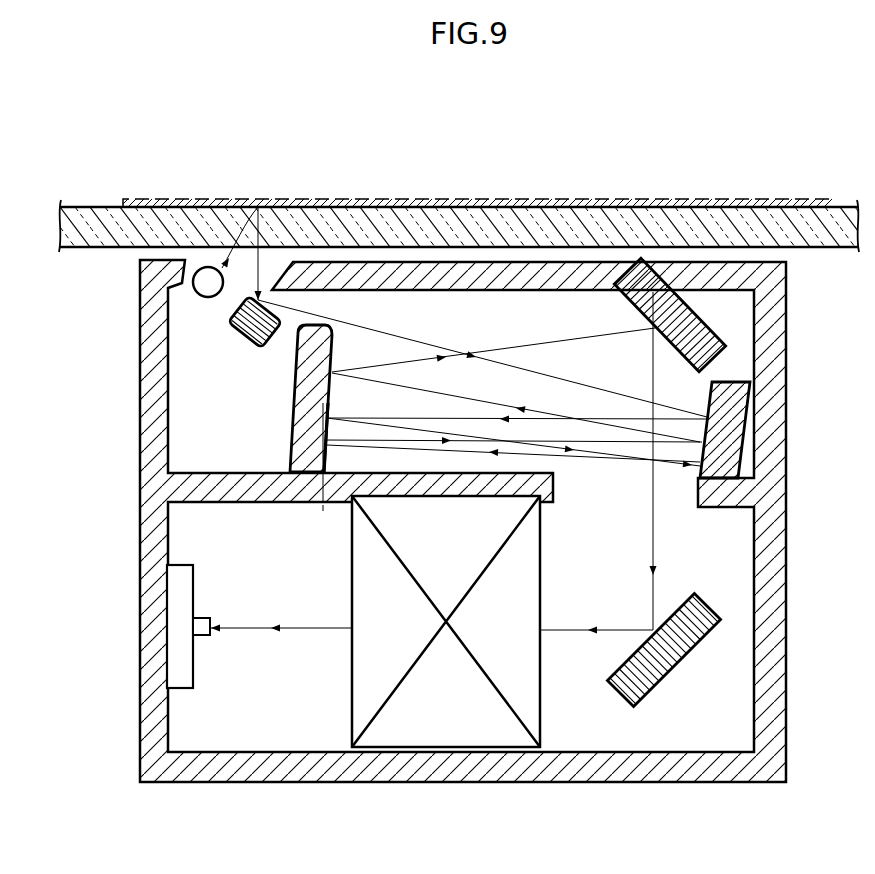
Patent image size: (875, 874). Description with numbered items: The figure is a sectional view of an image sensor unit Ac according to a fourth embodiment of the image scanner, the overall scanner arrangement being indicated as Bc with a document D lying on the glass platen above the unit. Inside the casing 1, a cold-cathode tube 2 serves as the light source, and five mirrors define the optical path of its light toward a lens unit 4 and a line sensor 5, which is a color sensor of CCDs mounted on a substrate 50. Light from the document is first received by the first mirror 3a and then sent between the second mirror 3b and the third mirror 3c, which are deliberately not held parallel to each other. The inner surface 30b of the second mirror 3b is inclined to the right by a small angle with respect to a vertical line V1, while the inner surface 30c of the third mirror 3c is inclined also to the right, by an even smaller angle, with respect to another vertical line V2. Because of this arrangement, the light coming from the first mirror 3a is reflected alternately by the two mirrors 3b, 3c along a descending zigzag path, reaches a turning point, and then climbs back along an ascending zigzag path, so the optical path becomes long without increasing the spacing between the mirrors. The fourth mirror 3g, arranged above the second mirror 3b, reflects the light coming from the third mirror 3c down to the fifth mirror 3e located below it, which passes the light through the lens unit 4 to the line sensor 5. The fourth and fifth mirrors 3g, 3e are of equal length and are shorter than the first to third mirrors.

The image reading unit Bc is at (165, 138).
The document D is at (330, 207).
The image sensor unit Ac is at (150, 382).
The casing 1 is at (155, 455).
The cold-cathode tube 2 is at (193, 291).
The first mirror 3a is at (246, 335).
The second mirror 3b is at (737, 412).
The third mirror 3c is at (300, 436).
The inner surface of the second mirror 30b is at (712, 380).
The inner surface of the third mirror 30c is at (329, 390).
The fourth mirror 3g is at (722, 333).
The fifth mirror 3e is at (656, 664).
The lens unit 4 is at (453, 717).
The line sensor 5 is at (218, 633).
The substrate 50 is at (180, 676).
The vertical line V1 is at (699, 457).
The vertical line V2 is at (300, 412).